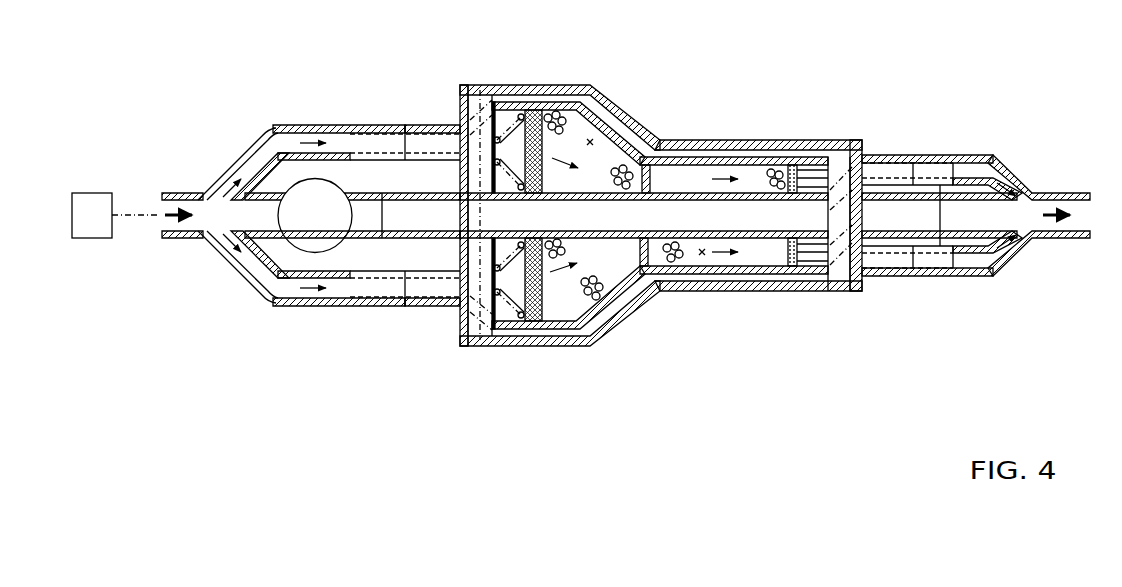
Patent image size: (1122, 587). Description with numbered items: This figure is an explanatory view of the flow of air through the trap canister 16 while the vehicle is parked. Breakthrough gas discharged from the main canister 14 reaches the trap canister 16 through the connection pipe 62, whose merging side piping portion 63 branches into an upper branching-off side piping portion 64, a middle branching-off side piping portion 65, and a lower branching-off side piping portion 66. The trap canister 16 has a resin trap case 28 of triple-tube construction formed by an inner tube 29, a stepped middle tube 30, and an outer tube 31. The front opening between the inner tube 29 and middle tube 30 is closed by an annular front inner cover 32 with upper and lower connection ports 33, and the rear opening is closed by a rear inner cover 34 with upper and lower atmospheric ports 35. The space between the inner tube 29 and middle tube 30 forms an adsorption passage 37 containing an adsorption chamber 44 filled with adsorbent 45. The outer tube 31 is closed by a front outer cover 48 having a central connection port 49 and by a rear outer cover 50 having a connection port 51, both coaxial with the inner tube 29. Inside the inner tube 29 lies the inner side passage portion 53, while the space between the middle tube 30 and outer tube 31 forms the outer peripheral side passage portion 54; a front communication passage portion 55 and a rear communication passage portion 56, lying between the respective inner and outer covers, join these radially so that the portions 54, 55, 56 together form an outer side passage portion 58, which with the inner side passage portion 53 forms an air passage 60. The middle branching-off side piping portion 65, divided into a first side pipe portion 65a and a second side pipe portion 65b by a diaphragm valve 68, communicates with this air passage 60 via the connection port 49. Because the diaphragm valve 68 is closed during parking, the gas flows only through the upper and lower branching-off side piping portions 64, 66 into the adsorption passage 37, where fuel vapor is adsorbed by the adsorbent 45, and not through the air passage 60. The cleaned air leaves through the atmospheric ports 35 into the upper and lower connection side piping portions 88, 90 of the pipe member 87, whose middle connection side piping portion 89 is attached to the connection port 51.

The main canister 14 is at (97, 193).
The trap canister 16 is at (828, 70).
The trap case 28 is at (455, 81).
The inner tube 29 is at (673, 188).
The middle tube 30 is at (715, 150).
The outer tube 31 is at (741, 142).
The front inner cover 32 is at (470, 88).
The connection ports 33 is at (433, 126).
The rear inner cover 34 is at (842, 157).
The atmospheric ports 35 is at (888, 160).
The adsorption passage 37 is at (702, 258).
The adsorption chamber 44 is at (598, 117).
The adsorbent 45 is at (618, 164).
The front outer cover 48 is at (464, 335).
The connection port 49 is at (398, 196).
The rear outer cover 50 is at (867, 270).
The connection port 51 is at (922, 238).
The inner side passage portion 53 is at (748, 216).
The outer peripheral side passage portion 54 is at (632, 298).
The front communication passage portion 55 is at (483, 290).
The rear communication passage portion 56 is at (836, 258).
The outer side passage portion 58 is at (557, 330).
The air passage 60 is at (486, 337).
The connection pipe 62 is at (261, 125).
The merging side piping portion 63 is at (171, 196).
The upper branching-off side piping portion 64 is at (392, 131).
The middle branching-off side piping portion 65 is at (360, 242).
The first side pipe portion 65a is at (263, 193).
The second side pipe portion 65b is at (368, 195).
The lower branching-off side piping portion 66 is at (383, 307).
The diaphragm valve 68 is at (303, 253).
The pipe member 87 is at (1000, 151).
The upper connection side piping portion 88 is at (930, 163).
The middle connection side piping portion 89 is at (975, 255).
The lower connection side piping portion 90 is at (1050, 193).